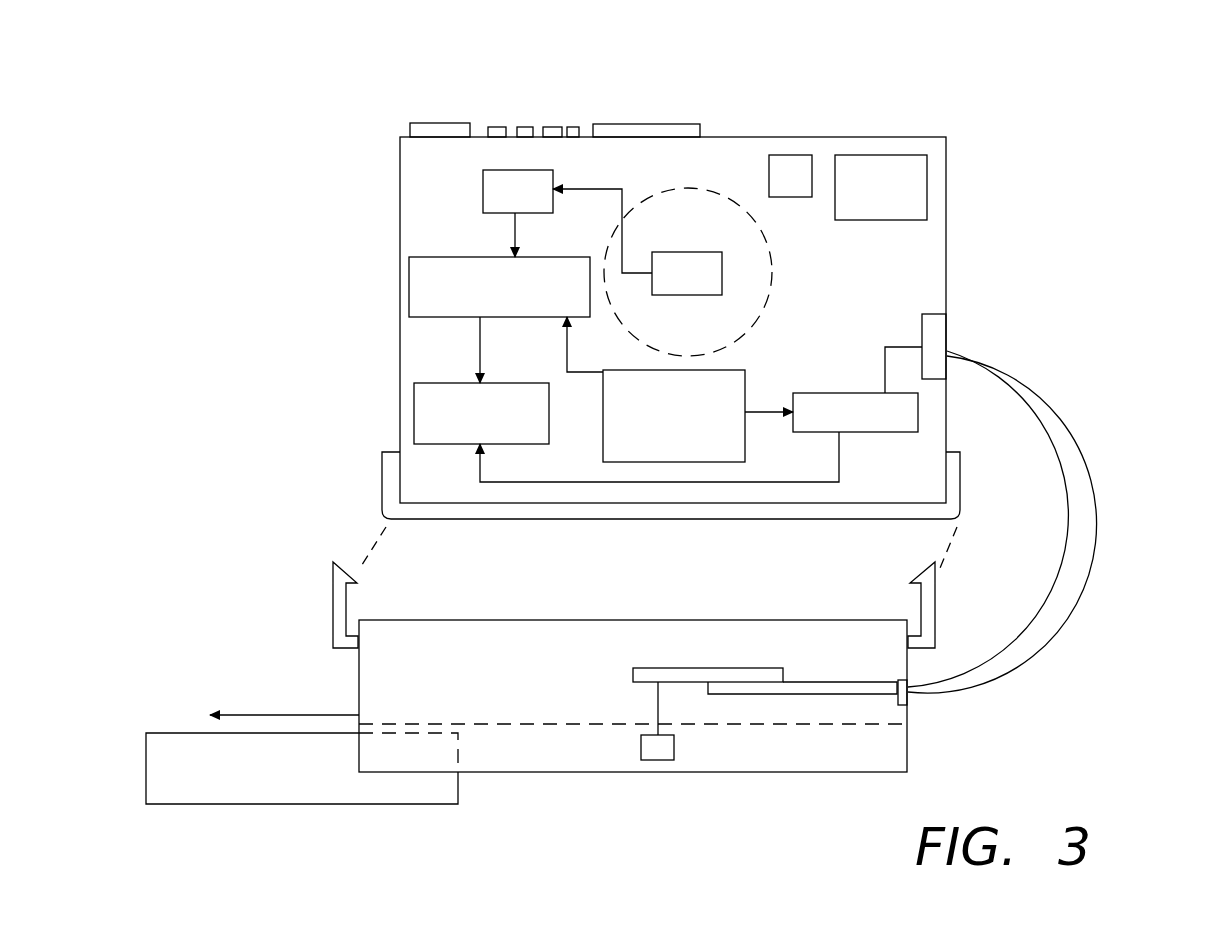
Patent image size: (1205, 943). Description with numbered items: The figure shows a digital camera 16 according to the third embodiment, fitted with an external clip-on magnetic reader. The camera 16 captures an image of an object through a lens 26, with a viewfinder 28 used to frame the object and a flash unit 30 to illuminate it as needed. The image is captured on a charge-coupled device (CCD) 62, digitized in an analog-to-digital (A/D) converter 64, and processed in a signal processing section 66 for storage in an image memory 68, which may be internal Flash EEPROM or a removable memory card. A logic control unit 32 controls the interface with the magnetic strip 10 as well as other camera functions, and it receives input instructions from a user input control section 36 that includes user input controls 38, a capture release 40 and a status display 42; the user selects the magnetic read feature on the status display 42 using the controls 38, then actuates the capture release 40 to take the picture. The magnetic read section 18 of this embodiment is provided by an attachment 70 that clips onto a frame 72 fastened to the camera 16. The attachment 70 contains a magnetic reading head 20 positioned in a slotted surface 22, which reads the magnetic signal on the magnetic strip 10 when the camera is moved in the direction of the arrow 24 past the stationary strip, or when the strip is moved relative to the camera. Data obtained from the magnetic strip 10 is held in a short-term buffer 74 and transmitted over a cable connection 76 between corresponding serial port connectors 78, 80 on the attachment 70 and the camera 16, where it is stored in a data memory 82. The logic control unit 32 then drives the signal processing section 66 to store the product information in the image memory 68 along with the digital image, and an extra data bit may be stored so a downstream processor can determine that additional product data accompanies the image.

The magnetic strip 10 is at (157, 778).
The digital camera 16 is at (948, 200).
The magnetic read section 18 is at (633, 790).
The magnetic reading head 20 is at (664, 752).
The slotted surface 22 is at (425, 724).
The arrow 24 is at (272, 714).
The lens 26 is at (705, 190).
The viewfinder 28 is at (793, 155).
The flash unit 30 is at (876, 155).
The logic control unit 32 is at (695, 462).
The user input control section 36 is at (738, 68).
The user input controls 38 is at (525, 127).
The capture release 40 is at (436, 123).
The status display 42 is at (663, 124).
The charge-coupled device (CCD) 62 is at (680, 252).
The analog-to-digital (A/D) converter 64 is at (483, 196).
The signal processing section 66 is at (409, 287).
The image memory 68 is at (414, 405).
The attachment 70 is at (413, 620).
The frame 72 is at (383, 465).
The short-term buffer 74 is at (752, 668).
The cable connection 76 is at (1101, 455).
The RS-232 port connector 78 is at (912, 698).
The RS-232 port connector 80 is at (948, 328).
The data memory 82 is at (843, 393).